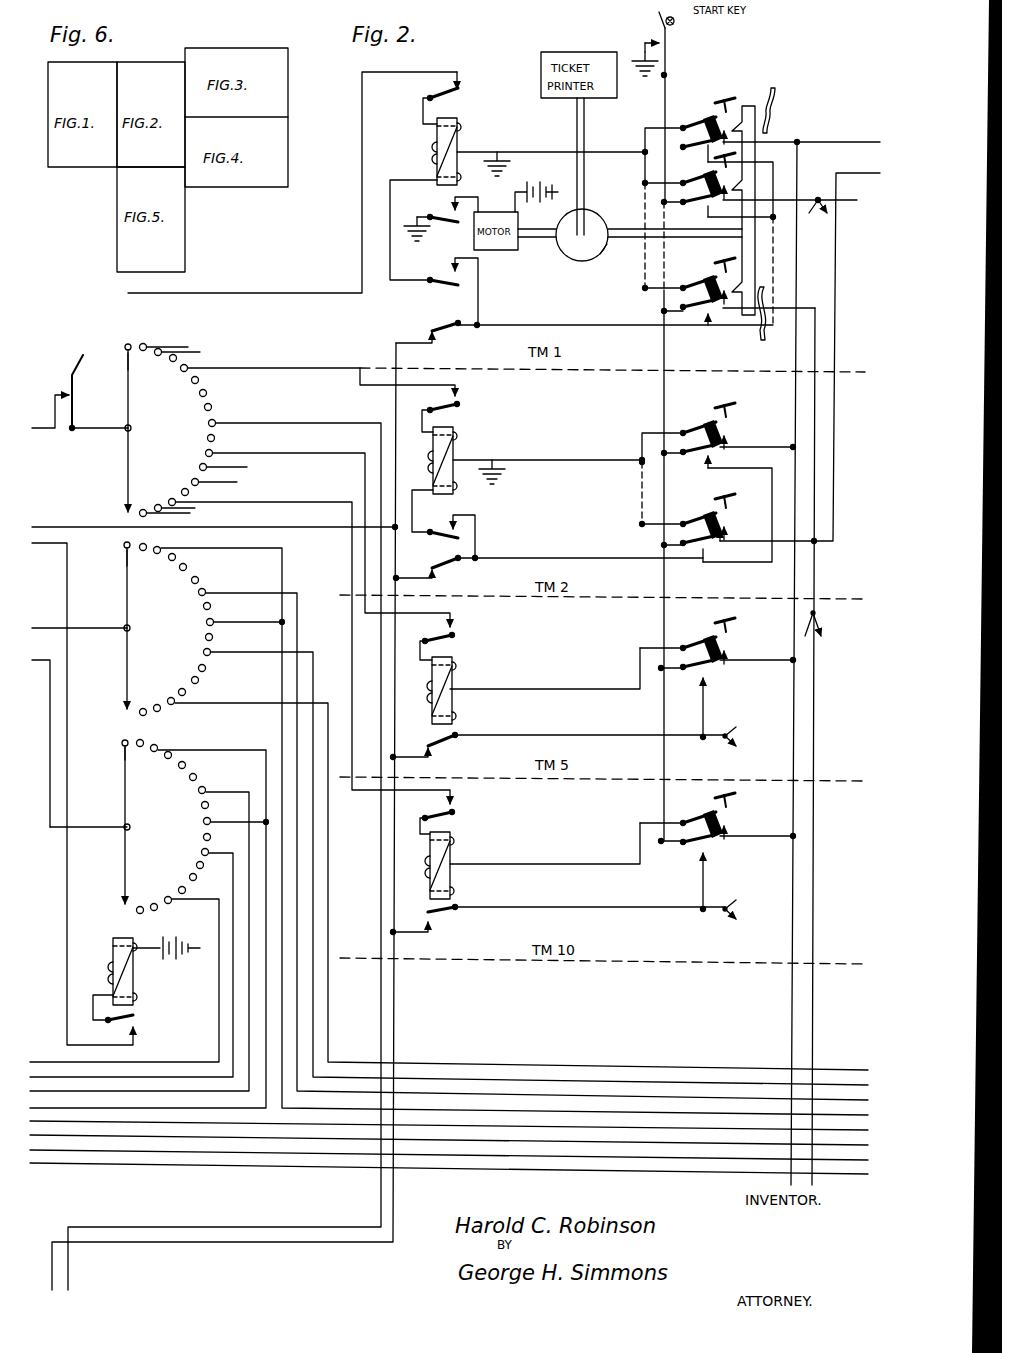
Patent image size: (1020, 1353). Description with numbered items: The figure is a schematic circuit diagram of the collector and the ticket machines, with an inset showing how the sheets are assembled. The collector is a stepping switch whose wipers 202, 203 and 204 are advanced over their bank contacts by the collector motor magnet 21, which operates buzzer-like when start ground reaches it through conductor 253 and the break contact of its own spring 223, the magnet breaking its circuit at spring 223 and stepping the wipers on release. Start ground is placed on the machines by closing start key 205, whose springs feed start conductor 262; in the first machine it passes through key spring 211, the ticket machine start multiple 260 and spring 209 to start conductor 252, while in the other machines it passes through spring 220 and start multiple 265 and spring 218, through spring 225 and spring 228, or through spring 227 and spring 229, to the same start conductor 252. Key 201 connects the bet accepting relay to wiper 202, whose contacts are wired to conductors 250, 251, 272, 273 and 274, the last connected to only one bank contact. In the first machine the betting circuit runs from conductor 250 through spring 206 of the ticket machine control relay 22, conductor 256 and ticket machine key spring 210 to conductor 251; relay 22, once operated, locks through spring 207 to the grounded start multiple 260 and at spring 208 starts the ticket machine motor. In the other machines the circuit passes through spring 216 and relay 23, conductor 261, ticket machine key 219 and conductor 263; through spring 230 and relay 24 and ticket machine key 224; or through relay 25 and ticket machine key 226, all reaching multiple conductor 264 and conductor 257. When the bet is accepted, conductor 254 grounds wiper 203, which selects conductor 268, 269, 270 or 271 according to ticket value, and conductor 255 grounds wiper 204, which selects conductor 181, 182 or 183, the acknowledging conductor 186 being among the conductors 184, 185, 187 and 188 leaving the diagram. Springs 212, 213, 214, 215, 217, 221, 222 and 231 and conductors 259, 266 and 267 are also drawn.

The collector motor magnet 21 is at (133, 965).
The ticket machine control relay 22 is at (437, 128).
The relay 23 is at (453, 448).
The relay 24 is at (452, 678).
The relay 25 is at (450, 855).
The conductor 181 is at (228, 750).
The conductor 182 is at (229, 792).
The conductor 183 is at (228, 853).
The conductor 184 is at (198, 899).
The conductor 185 is at (448, 1119).
The $2.00 acknowledging conductor 186 is at (448, 1134).
The conductor 187 is at (448, 1149).
The conductor 188 is at (448, 1162).
The key 201 is at (72, 372).
The wiper 202 is at (128, 395).
The wiper 203 is at (128, 597).
The wiper 204 is at (126, 798).
The start key 205 is at (668, 52).
The spring 206 is at (462, 94).
The spring 207 is at (434, 252).
The spring 208 is at (441, 225).
The spring 209 is at (440, 335).
The ticket machine key spring 210 is at (698, 124).
The key spring 211 is at (683, 146).
The cam contact 212 is at (674, 170).
The cam contact 213 is at (699, 189).
The cam contact 214 is at (697, 288).
The cam contact 215 is at (683, 302).
The spring 216 is at (458, 407).
The relay contact 217 is at (458, 538).
The spring 218 is at (446, 567).
The ticket machine key 219 is at (698, 428).
The spring 220 is at (700, 468).
The cam contact 221 is at (700, 520).
The cam contact 222 is at (708, 540).
The spring 223 is at (134, 1017).
The ticket machine key 224 is at (720, 637).
The spring 225 is at (707, 660).
The ticket machine key 226 is at (718, 812).
The spring 227 is at (708, 832).
The spring 228 is at (436, 742).
The spring 229 is at (436, 922).
The spring 230 is at (458, 637).
The relay contact 231 is at (458, 814).
The conductor 250 is at (296, 294).
The conductor 251 is at (298, 369).
The start conductor 252 is at (236, 527).
The conductor 253 is at (80, 912).
The conductor 254 is at (96, 658).
The conductor 255 is at (90, 826).
The conductor 256 is at (535, 152).
The conductor 257 is at (840, 132).
The conductor 259 is at (810, 308).
The ticket machine start multiple 260 is at (776, 167).
The conductor 261 is at (567, 460).
The start conductor 262 is at (670, 92).
The conductor 263 is at (755, 447).
The multiple conductor 264 is at (793, 385).
The ticket machine start multiple 265 is at (582, 558).
The conductor 266 is at (834, 440).
The conductor 267 is at (818, 576).
The conductor 268 is at (285, 553).
The conductor 269 is at (310, 590).
The conductor 270 is at (313, 652).
The conductor 271 is at (262, 703).
The conductor 272 is at (258, 454).
The conductor 273 is at (247, 503).
The conductor 274 is at (258, 423).